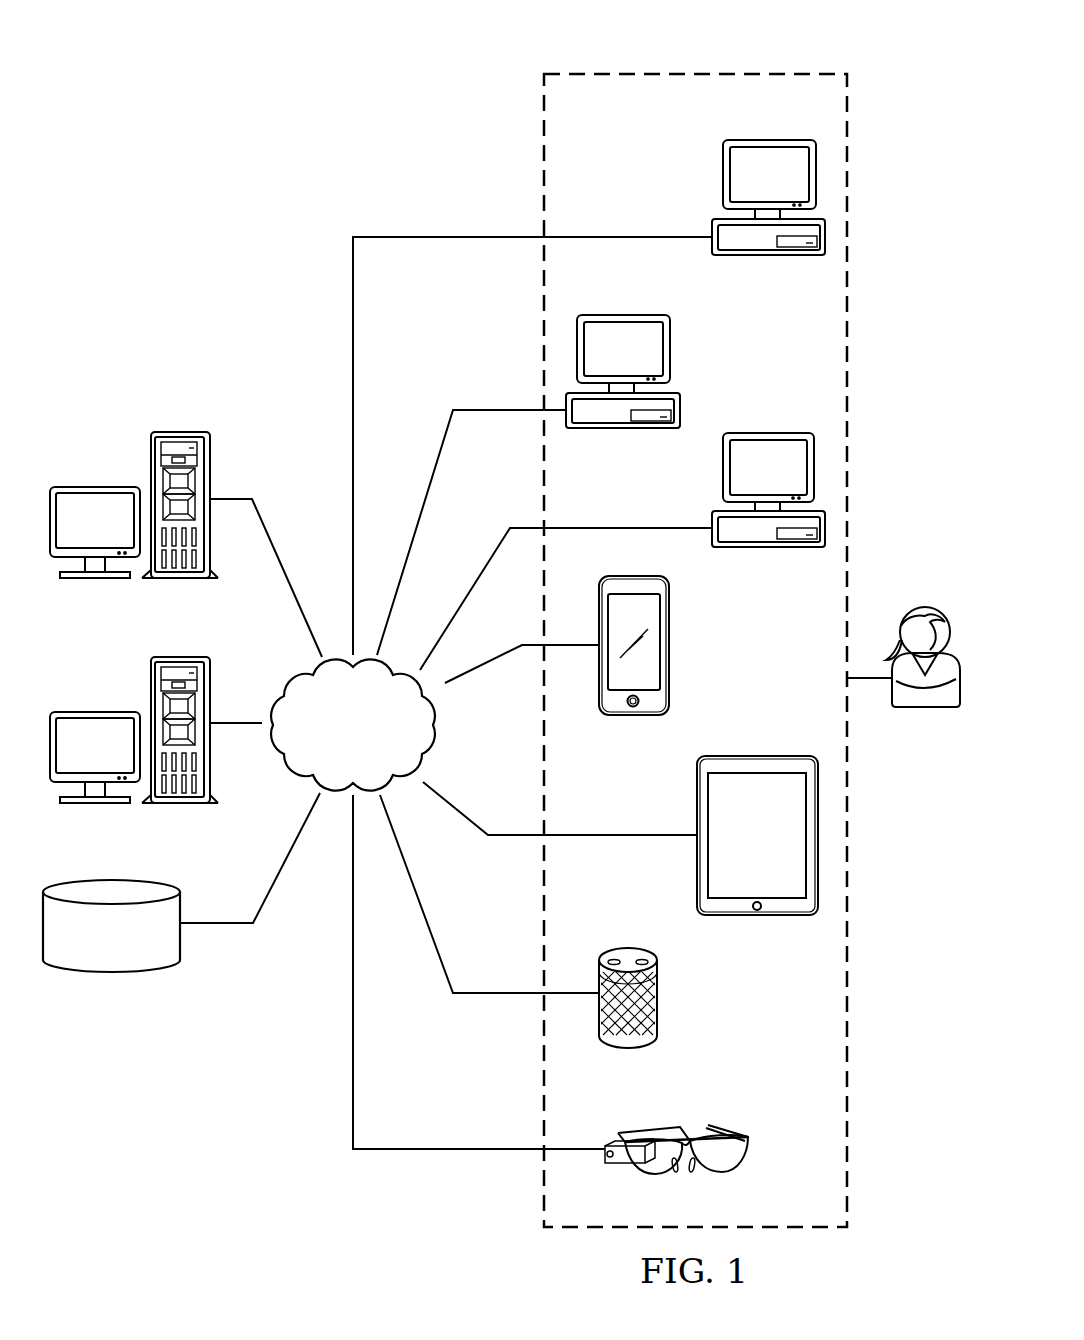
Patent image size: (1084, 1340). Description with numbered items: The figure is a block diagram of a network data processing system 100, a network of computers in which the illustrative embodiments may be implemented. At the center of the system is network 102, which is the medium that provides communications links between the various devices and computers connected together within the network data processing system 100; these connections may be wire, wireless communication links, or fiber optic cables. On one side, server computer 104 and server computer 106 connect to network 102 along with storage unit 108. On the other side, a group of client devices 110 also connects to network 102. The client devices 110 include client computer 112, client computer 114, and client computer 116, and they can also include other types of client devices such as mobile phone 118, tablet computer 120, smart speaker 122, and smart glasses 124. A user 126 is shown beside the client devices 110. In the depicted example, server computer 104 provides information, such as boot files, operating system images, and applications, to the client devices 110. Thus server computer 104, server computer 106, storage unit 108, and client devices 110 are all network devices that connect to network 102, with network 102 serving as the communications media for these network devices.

The network data processing system 100 is at (166, 148).
The network 102 is at (375, 756).
The server computer 104 is at (96, 487).
The server computer 106 is at (96, 712).
The storage unit 108 is at (110, 972).
The client devices 110 is at (741, 64).
The client computer 112 is at (768, 140).
The client computer 114 is at (622, 316).
The client computer 116 is at (770, 433).
The mobile phone 118 is at (669, 660).
The tablet computer 120 is at (735, 852).
The smart speaker 122 is at (657, 1003).
The smart glasses 124 is at (745, 1155).
The user 126 is at (925, 606).